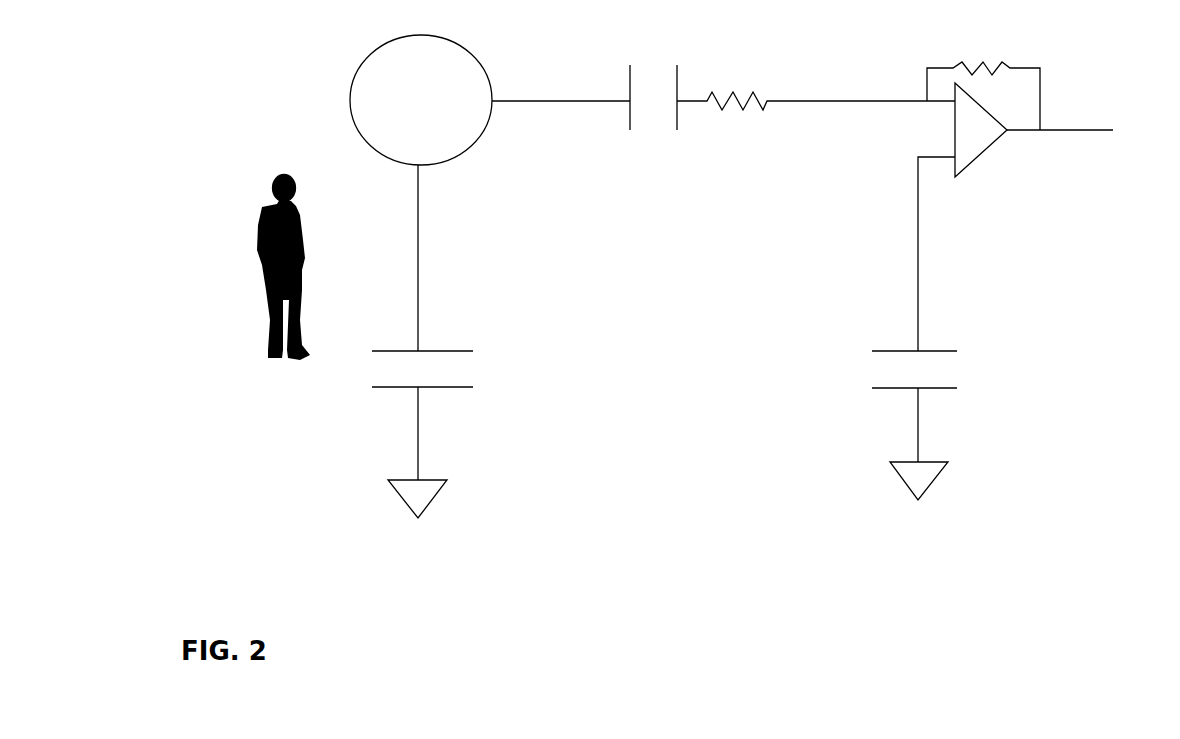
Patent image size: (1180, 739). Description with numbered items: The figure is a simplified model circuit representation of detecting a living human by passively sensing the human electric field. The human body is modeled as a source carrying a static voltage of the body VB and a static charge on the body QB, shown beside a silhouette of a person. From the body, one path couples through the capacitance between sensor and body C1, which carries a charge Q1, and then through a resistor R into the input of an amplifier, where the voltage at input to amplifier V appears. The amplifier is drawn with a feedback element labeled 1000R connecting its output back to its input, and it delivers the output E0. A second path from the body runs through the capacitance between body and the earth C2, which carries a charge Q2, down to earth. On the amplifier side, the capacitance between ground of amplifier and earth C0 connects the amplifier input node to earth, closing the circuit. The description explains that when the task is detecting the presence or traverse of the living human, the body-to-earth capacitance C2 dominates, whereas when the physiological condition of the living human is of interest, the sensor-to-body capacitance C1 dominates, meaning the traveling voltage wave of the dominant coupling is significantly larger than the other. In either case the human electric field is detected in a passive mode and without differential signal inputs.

The static voltage of the body VB is at (421, 100).
The static charge on the body QB is at (415, 127).
The capacitance between sensor and body C1 is at (653, 80).
The charge on C1 Q1 is at (647, 106).
The input resistor R is at (816, 88).
The feedback resistor 1000R is at (983, 84).
The output E0 is at (1073, 132).
The voltage at input to amplifier V is at (918, 254).
The capacitance between ground of amplifier and earth C0 is at (931, 425).
The capacitance between body and the earth C2 is at (446, 341).
The charge on C2 Q2 is at (413, 372).